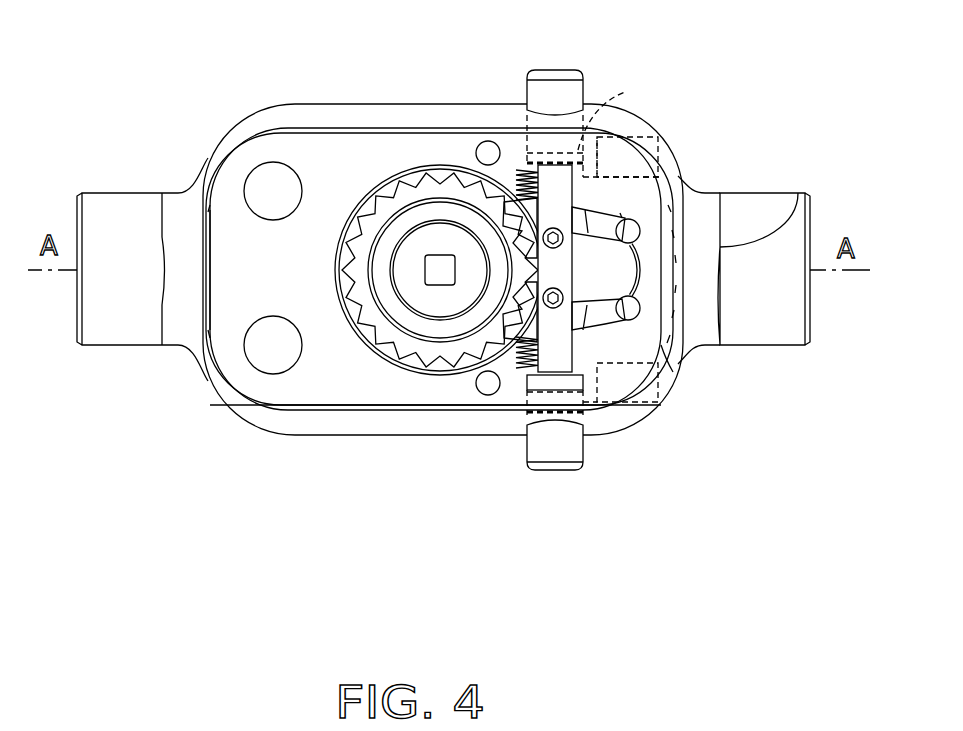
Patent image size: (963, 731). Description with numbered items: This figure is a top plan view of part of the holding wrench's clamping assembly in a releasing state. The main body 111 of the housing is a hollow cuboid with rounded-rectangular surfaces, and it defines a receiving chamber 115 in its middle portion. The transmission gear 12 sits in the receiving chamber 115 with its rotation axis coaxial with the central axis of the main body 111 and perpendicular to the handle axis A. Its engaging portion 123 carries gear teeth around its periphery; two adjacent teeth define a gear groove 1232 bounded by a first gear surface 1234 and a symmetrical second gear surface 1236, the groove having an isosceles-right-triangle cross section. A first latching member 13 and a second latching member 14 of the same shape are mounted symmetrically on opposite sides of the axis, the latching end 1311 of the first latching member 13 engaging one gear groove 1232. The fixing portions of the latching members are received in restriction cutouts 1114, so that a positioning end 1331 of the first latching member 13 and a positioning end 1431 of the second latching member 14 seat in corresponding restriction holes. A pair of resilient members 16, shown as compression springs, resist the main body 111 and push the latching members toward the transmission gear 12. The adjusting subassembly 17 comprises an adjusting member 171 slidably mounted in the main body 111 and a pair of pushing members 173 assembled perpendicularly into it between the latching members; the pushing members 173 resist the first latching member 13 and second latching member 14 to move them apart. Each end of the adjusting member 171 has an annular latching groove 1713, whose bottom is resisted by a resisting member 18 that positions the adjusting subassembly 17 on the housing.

The main body 111 is at (207, 122).
The receiving chamber 115 is at (363, 212).
The transmission gear 12 is at (405, 197).
The adjusting subassembly 17 is at (545, 241).
The adjusting member 171 is at (548, 64).
The latching groove 1713 is at (635, 113).
The resisting member 18 is at (623, 152).
The second latching member 14 is at (605, 220).
The positioning end 1431 is at (800, 193).
The restriction cutout 1114 is at (620, 213).
The positioning end 1331 is at (670, 360).
The first latching member 13 is at (610, 316).
The pushing member 173 is at (553, 300).
The resilient member 16 is at (522, 335).
The latching end 1311 is at (505, 318).
The second gear surface 1236 is at (432, 345).
The first gear surface 1234 is at (402, 358).
The gear groove 1232 is at (433, 517).
The engaging portion 123 is at (345, 330).